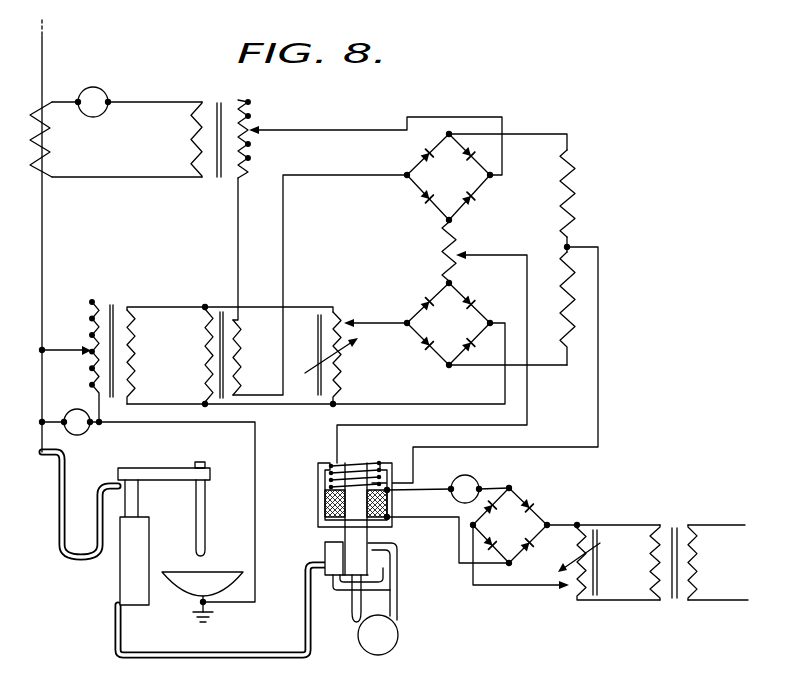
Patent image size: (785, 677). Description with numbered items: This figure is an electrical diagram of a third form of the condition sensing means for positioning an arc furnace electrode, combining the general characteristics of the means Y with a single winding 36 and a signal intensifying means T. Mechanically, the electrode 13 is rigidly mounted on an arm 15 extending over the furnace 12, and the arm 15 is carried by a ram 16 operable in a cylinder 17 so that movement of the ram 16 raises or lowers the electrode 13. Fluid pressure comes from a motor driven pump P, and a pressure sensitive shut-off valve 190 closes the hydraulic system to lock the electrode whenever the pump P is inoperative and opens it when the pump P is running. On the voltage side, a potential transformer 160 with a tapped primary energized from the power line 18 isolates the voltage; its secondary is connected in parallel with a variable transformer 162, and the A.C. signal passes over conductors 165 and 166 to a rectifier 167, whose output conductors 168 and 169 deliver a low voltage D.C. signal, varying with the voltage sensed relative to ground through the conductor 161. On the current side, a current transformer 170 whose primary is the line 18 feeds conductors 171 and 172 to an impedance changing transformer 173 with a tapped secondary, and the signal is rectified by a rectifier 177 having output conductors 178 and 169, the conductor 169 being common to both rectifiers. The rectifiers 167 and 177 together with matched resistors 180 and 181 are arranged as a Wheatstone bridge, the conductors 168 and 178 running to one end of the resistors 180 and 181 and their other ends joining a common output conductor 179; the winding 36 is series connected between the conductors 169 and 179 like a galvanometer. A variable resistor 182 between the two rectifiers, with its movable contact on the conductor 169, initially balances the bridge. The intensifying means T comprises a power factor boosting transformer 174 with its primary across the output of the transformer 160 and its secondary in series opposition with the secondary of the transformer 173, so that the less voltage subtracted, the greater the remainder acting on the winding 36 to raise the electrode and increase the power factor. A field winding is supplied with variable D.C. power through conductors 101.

The power line 18 is at (46, 262).
The current transformer 170 is at (53, 147).
The conductor 171 is at (104, 180).
The conductor 172 is at (130, 102).
The impedance changing transformer 173 is at (228, 103).
The power factor boosting transformer 174 is at (244, 359).
The potential transformer 160 is at (118, 308).
The conductor 161 is at (253, 442).
The variable transformer 162 is at (343, 366).
The conductor 165 is at (381, 404).
The conductor 166 is at (390, 322).
The rectifier 167 is at (449, 324).
The output conductor 168 is at (533, 368).
The common output conductor 169 is at (479, 262).
The rectifier 177 is at (449, 177).
The output conductor 178 is at (528, 133).
The common output conductor 179 is at (600, 376).
The matched resistor 180 is at (578, 309).
The matched resistor 181 is at (576, 203).
The variable resistor 182 is at (462, 252).
The arm 15 is at (155, 467).
The ram 16 is at (138, 503).
The electrode 13 is at (203, 500).
The cylinder 17 is at (127, 573).
The furnace 12 is at (180, 584).
The winding 36 is at (346, 462).
The conductors 101 is at (433, 486).
The shut-off valve 190 is at (325, 549).
The pump P is at (395, 637).
The signal intensifying means T is at (293, 269).
The condition sensing means Y is at (476, 106).